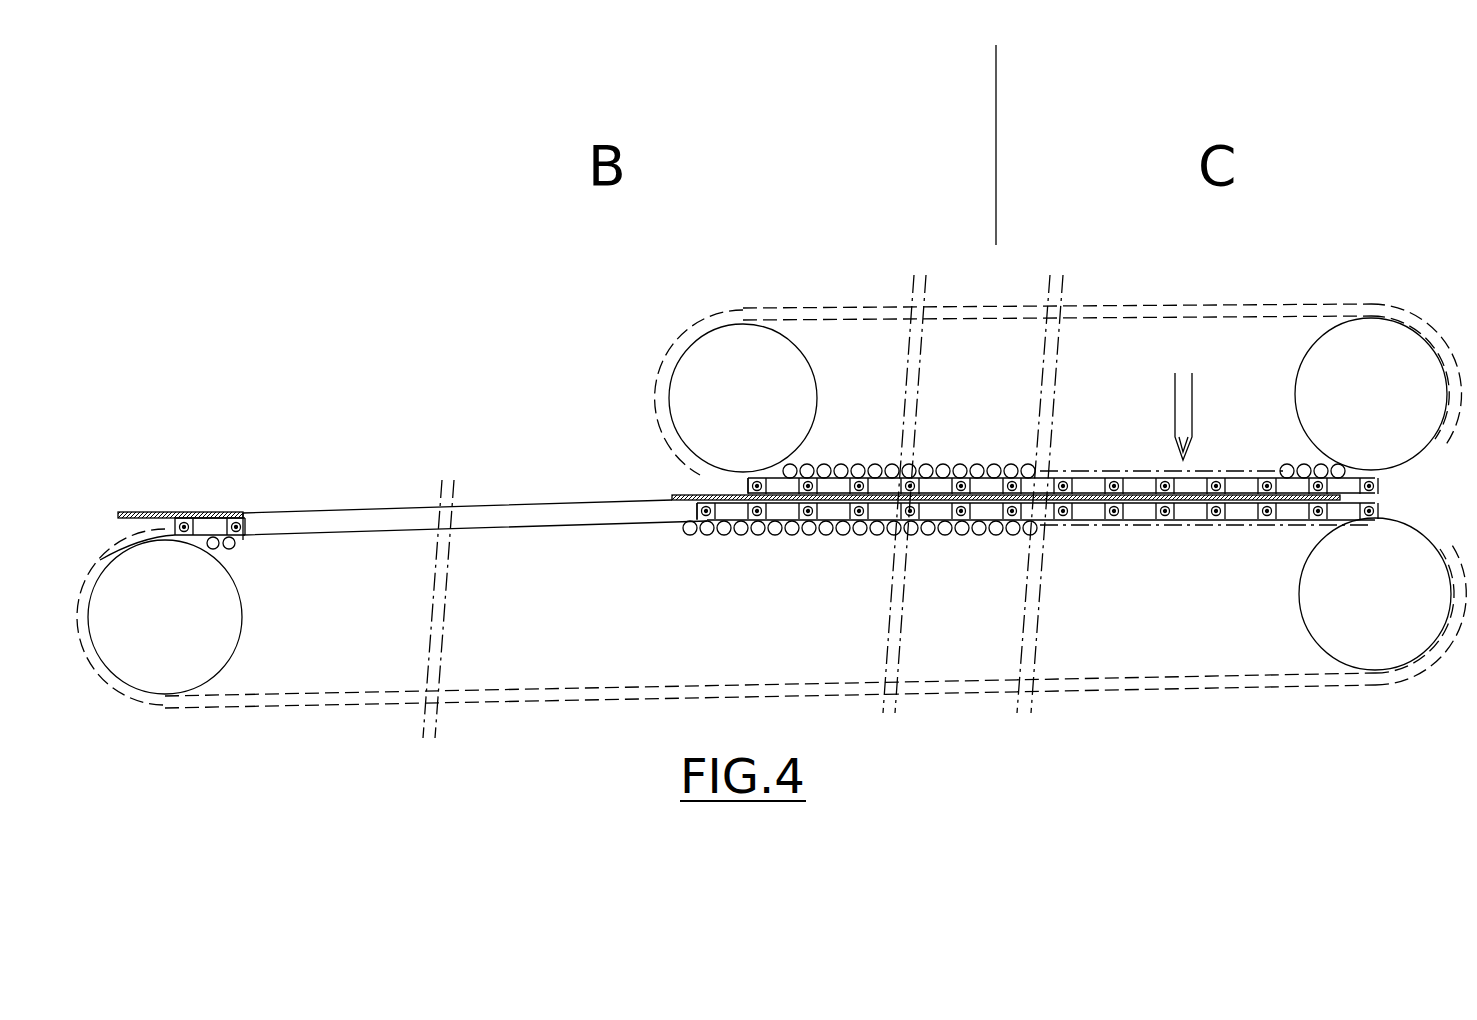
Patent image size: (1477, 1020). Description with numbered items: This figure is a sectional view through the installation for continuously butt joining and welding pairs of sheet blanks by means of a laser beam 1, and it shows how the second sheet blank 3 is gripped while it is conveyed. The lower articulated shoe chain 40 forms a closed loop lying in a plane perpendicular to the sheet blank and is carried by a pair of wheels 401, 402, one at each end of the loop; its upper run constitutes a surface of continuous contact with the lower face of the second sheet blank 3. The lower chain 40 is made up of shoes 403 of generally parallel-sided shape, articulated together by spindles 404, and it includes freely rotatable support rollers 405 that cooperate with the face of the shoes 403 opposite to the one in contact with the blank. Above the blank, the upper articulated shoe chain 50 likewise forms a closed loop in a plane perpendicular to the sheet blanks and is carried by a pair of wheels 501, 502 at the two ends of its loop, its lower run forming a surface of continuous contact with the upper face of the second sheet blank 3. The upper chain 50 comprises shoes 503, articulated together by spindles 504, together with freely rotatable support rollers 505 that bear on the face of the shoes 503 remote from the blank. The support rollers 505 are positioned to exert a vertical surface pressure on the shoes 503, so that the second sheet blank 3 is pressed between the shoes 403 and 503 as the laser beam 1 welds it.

The laser beam 1 is at (1173, 400).
The second sheet blank 3 is at (178, 510).
The lower articulated shoe chain 40 is at (603, 492).
The upper articulated shoe chain 50 is at (1200, 308).
The wheel 401 is at (232, 655).
The wheel 402 is at (1304, 634).
The shoe 403 is at (770, 522).
The spindle 404 is at (1272, 512).
The support roller 405 is at (240, 548).
The wheel 501 is at (818, 395).
The wheel 502 is at (1298, 380).
The shoe 503 is at (876, 478).
The spindle 504 is at (1218, 478).
The support roller 505 is at (935, 464).